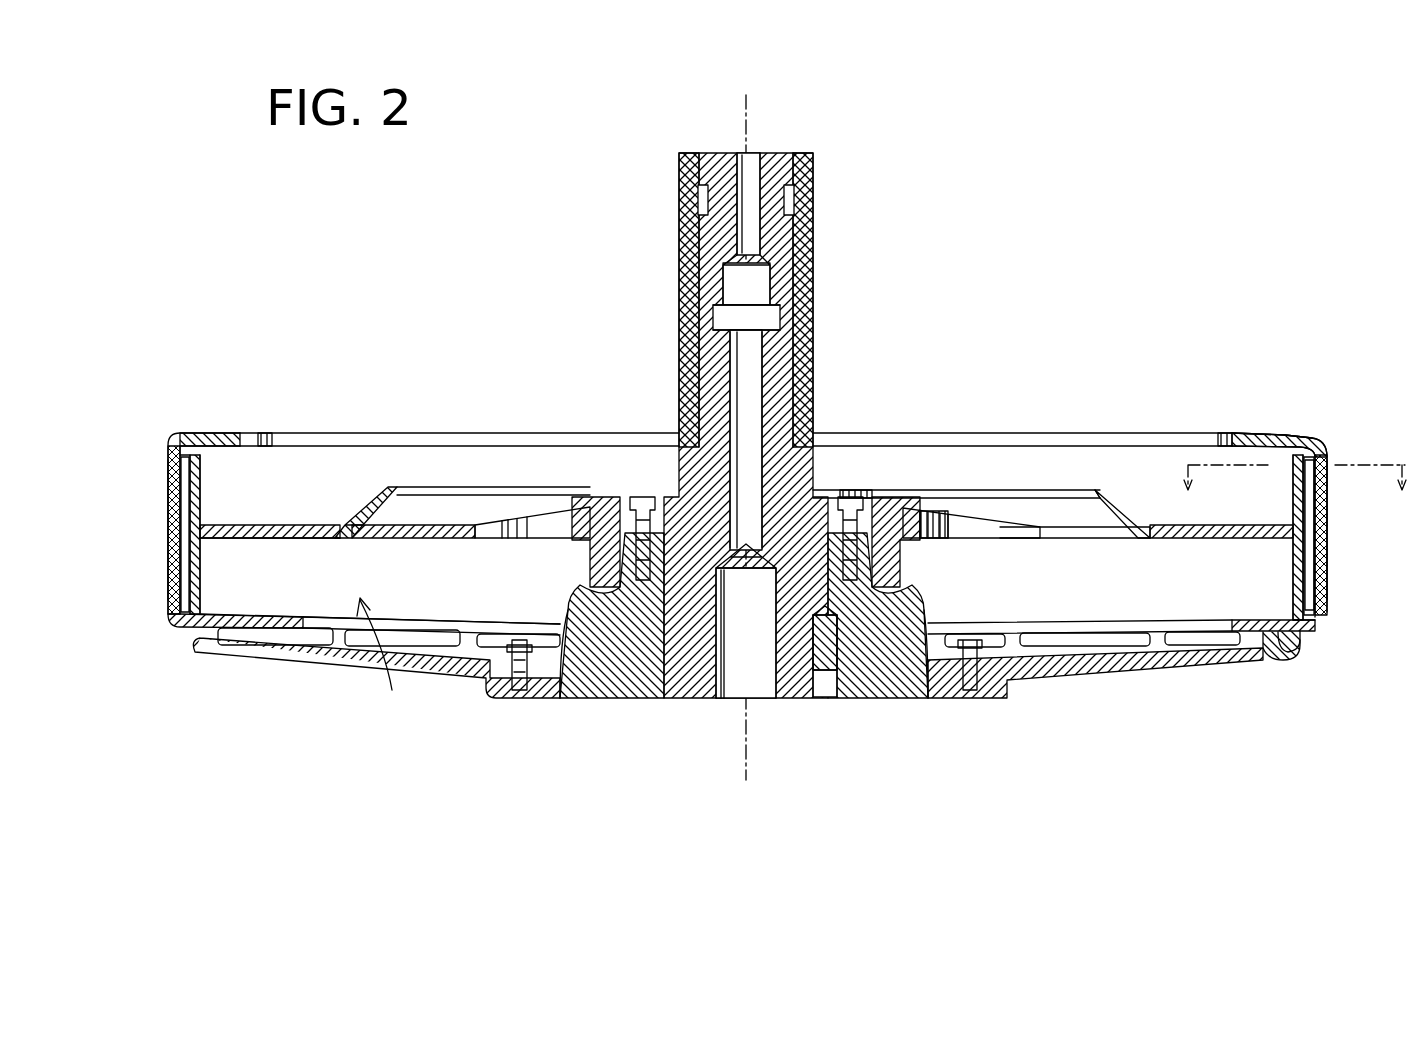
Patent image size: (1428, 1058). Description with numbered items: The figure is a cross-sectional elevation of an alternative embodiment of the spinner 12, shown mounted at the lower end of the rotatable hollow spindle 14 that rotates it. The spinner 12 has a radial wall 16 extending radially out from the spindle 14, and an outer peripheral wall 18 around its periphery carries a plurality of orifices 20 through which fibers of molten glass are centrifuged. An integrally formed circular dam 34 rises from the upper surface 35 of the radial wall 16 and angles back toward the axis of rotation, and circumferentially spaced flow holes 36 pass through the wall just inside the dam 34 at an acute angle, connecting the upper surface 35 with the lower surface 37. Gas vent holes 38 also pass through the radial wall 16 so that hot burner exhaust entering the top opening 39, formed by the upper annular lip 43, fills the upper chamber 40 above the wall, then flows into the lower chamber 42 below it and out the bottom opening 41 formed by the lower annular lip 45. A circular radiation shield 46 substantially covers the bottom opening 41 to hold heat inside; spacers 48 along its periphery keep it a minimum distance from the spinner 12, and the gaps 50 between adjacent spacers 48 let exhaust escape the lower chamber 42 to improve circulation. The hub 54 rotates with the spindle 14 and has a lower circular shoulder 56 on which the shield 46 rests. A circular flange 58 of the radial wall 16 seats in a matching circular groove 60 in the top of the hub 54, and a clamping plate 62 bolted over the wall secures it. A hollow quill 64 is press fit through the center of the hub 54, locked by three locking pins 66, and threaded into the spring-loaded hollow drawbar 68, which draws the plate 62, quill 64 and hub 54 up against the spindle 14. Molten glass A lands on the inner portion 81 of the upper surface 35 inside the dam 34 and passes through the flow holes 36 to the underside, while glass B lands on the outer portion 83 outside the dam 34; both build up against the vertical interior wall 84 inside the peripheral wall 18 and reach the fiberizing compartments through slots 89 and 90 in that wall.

The spinner 12 is at (1212, 388).
The spindle 14 is at (805, 152).
The radial wall 16 is at (1060, 540).
The outer peripheral wall 18 is at (1312, 436).
The orifices 20 is at (168, 522).
The circular dam 34 is at (345, 538).
The upper surface 35 is at (318, 524).
The flow holes 36 is at (345, 540).
The lower surface 37 is at (280, 545).
The gas vent holes 38 is at (505, 538).
The top opening 39 is at (1100, 470).
The upper chamber 40 is at (736, 464).
The bottom opening 41 is at (382, 659).
The lower chamber 42 is at (380, 600).
The upper annular lip 43 is at (1265, 433).
The lower annular lip 45 is at (1280, 660).
The radiation shield 46 is at (1060, 680).
The spacers 48 is at (1160, 660).
The gaps 50 is at (200, 640).
The hub 54 is at (610, 688).
The lower circular shoulder 56 is at (527, 690).
The circular flange 58 is at (900, 575).
The circular groove 60 is at (595, 590).
The clamping plate 62 is at (872, 492).
The quill 64 is at (795, 690).
The locking pins 66 is at (838, 660).
The drawbar 68 is at (770, 153).
The inner portion 81 is at (1060, 540).
The outer portion 83 is at (1220, 527).
The vertical interior wall 84 is at (200, 468).
The slots 89 is at (190, 572).
The slots 90 is at (1327, 498).